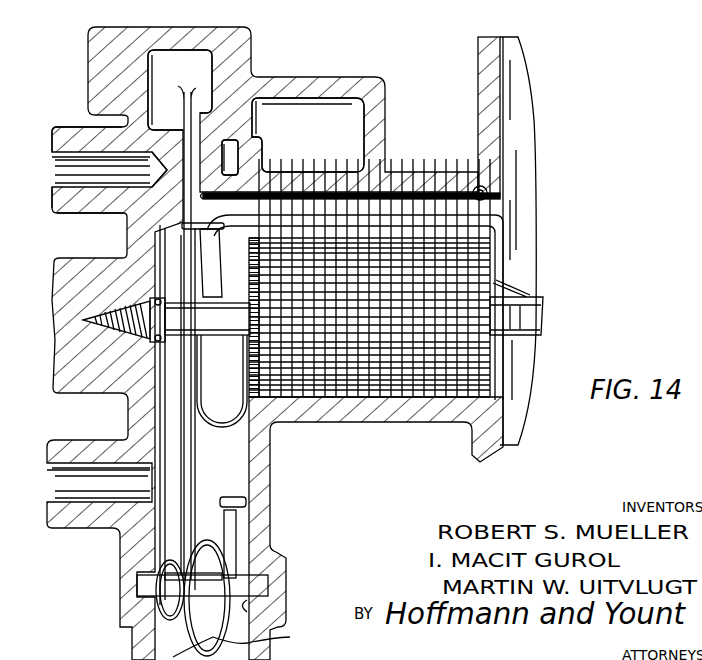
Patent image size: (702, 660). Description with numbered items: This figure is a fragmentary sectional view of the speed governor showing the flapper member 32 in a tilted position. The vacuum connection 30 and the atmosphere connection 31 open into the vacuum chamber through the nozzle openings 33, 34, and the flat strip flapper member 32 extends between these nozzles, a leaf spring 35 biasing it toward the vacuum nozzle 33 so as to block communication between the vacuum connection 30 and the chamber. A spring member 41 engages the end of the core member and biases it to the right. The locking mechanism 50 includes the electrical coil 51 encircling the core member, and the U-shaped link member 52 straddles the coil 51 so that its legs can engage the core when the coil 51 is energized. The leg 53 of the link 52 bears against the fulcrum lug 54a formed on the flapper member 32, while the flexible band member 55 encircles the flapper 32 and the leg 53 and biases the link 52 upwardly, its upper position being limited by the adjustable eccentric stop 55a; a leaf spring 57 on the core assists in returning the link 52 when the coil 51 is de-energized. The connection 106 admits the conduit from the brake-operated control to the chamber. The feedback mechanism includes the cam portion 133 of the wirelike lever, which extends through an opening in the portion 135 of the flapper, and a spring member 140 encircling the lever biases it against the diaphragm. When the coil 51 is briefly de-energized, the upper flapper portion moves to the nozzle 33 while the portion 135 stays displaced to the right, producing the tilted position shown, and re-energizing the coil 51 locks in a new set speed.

The vacuum connection 30 is at (58, 131).
The atmosphere connection 31 is at (361, 116).
The flapper member 32 is at (184, 112).
The vacuum nozzle opening 33 is at (165, 170).
The atmospheric nozzle opening 34 is at (238, 165).
The leaf spring 35 is at (208, 436).
The spring member 41 is at (115, 275).
The locking mechanism 50 is at (368, 209).
The electrical coil 51 is at (357, 380).
The link member 52 is at (432, 213).
The leg of link member 53 is at (237, 340).
The fulcrum lug 54a is at (200, 244).
The flexible band member 55 is at (247, 191).
The adjustable eccentric stop 55a is at (488, 190).
The leaf spring 57 is at (525, 292).
The connection 106 is at (50, 533).
The cam portion 133 is at (234, 640).
The portion of flapper member 135 is at (207, 570).
The spring member 140 is at (237, 611).